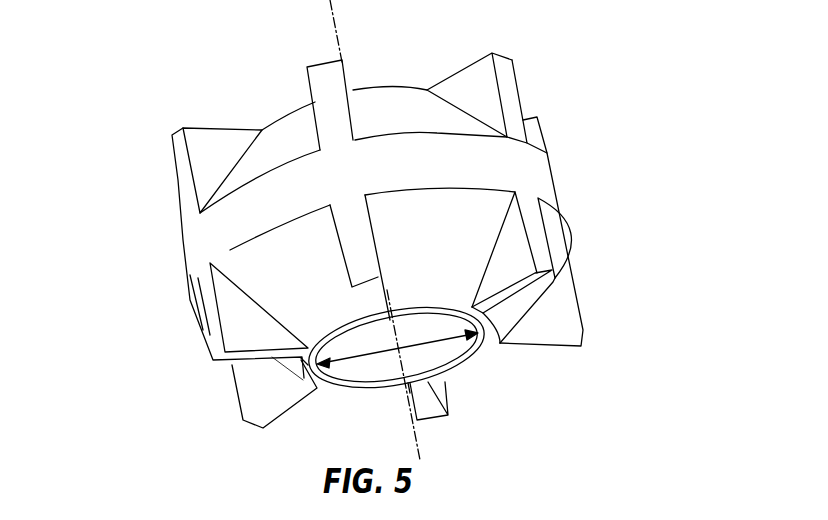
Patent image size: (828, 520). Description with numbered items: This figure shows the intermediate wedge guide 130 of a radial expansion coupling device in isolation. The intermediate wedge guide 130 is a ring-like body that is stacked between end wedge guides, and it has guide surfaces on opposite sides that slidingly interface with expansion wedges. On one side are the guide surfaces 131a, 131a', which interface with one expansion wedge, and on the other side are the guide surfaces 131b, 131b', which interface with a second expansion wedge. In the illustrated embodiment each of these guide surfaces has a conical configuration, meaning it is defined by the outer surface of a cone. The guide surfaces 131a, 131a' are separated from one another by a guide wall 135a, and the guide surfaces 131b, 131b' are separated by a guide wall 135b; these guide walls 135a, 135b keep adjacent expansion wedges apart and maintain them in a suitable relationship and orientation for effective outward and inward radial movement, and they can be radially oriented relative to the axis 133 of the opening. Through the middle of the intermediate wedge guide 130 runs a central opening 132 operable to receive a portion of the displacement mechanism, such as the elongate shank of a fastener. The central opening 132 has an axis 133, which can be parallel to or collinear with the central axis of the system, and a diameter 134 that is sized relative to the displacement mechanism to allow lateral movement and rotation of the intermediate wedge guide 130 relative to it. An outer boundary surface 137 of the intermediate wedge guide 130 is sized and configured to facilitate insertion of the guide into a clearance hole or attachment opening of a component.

The intermediate wedge guide 130 is at (183, 61).
The guide surface 131a is at (232, 133).
The guide surface 131a' is at (442, 79).
The guide surface 131b is at (216, 311).
The guide surface 131b' is at (560, 238).
The central opening 132 is at (439, 348).
The axis 133 is at (402, 367).
The diameter 134 is at (365, 360).
The guide wall 135a is at (327, 98).
The guide wall 135b is at (353, 252).
The outer boundary surface 137 is at (525, 170).